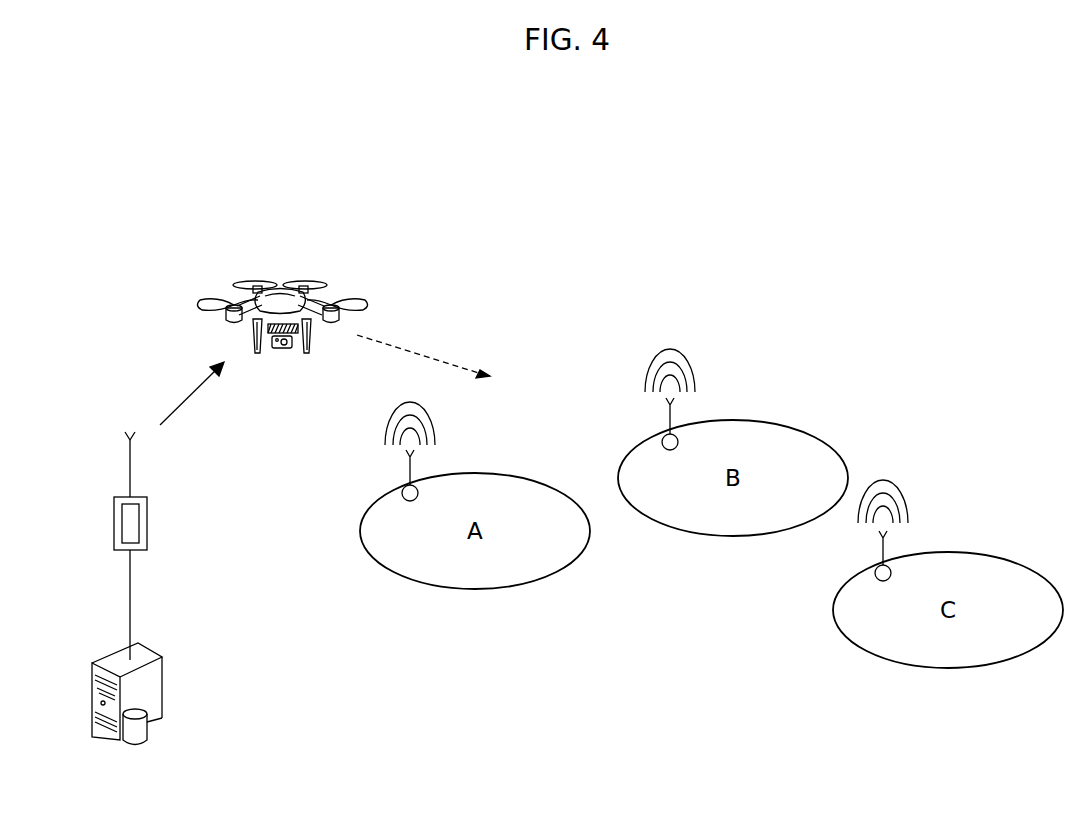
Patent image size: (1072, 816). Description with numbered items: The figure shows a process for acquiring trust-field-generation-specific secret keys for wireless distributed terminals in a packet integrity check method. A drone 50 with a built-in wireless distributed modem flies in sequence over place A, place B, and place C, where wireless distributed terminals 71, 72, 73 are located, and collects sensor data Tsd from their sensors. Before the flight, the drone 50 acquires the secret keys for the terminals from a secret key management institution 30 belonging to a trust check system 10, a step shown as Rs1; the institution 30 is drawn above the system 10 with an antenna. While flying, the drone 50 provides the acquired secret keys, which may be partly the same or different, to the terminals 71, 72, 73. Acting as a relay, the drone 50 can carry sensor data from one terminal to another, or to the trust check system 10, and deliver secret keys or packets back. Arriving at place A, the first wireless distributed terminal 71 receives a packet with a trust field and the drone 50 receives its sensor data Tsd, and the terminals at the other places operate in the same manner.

The trust check system 10 is at (162, 686).
The secret key management institution 30 is at (147, 522).
The drone 50 is at (297, 282).
The first wireless distributed terminal 71 is at (402, 490).
The wireless distributed terminal 72 is at (662, 438).
The wireless distributed terminal 73 is at (875, 569).
The secret key acquisition Rs1 is at (188, 392).
The sensor data Tsd is at (893, 483).